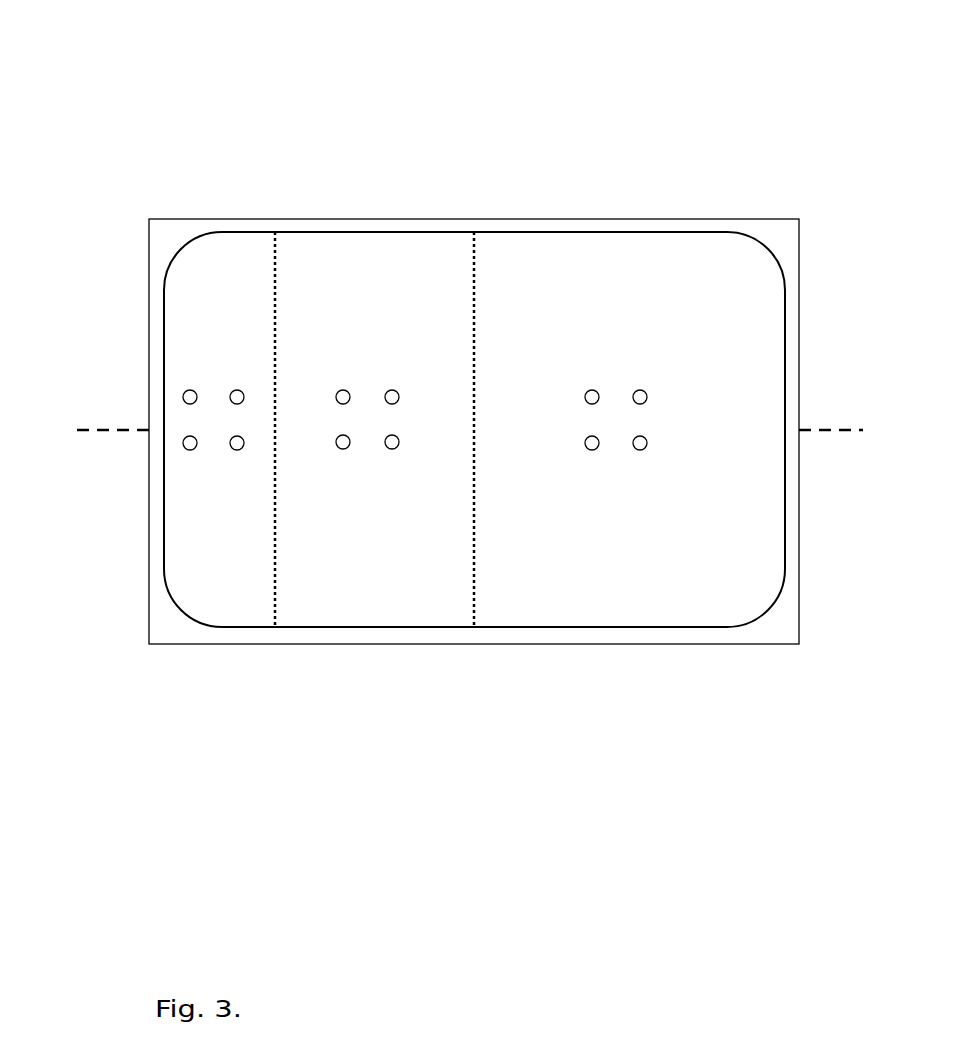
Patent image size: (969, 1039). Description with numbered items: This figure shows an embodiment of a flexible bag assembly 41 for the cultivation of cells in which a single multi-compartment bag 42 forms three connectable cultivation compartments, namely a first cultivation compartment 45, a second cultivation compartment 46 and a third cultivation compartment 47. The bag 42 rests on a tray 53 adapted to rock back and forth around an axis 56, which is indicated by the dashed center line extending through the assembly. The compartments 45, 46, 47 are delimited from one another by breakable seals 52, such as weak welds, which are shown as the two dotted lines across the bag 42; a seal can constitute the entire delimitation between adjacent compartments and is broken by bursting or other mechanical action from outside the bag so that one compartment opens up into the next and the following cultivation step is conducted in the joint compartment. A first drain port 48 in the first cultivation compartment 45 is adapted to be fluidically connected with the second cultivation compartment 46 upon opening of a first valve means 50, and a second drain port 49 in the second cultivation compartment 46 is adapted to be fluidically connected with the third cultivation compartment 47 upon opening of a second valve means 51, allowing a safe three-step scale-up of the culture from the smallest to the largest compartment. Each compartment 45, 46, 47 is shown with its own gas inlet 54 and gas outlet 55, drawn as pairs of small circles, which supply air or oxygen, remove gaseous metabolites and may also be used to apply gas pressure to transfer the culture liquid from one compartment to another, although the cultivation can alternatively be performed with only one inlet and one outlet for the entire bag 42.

The flexible bag assembly 41 is at (379, 117).
The multi-compartment bag 42 is at (527, 232).
The first cultivation compartment 45 is at (230, 595).
The second cultivation compartment 46 is at (385, 595).
The third cultivation compartment 47 is at (610, 593).
The first drain port 48 is at (275, 550).
The second drain port 49 is at (474, 560).
The first valve means 50 is at (275, 335).
The second valve means 51 is at (473, 308).
The breakable seal 52 is at (330, 422).
The tray 53 is at (748, 643).
The gas inlet 54 is at (585, 393).
The gas outlet 55 is at (633, 398).
The axis 56 is at (825, 431).